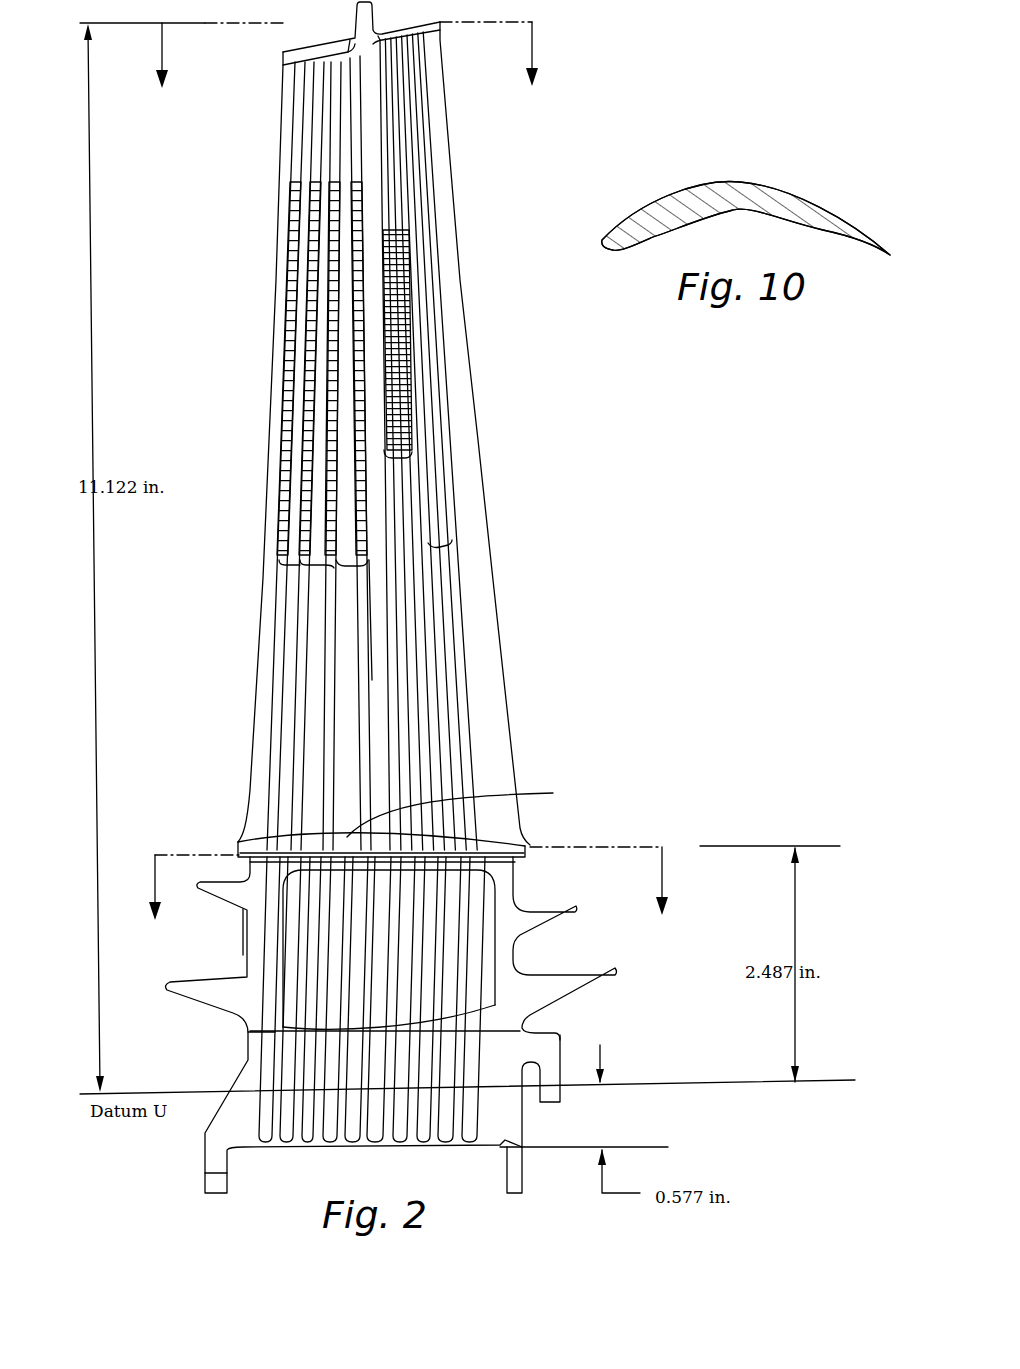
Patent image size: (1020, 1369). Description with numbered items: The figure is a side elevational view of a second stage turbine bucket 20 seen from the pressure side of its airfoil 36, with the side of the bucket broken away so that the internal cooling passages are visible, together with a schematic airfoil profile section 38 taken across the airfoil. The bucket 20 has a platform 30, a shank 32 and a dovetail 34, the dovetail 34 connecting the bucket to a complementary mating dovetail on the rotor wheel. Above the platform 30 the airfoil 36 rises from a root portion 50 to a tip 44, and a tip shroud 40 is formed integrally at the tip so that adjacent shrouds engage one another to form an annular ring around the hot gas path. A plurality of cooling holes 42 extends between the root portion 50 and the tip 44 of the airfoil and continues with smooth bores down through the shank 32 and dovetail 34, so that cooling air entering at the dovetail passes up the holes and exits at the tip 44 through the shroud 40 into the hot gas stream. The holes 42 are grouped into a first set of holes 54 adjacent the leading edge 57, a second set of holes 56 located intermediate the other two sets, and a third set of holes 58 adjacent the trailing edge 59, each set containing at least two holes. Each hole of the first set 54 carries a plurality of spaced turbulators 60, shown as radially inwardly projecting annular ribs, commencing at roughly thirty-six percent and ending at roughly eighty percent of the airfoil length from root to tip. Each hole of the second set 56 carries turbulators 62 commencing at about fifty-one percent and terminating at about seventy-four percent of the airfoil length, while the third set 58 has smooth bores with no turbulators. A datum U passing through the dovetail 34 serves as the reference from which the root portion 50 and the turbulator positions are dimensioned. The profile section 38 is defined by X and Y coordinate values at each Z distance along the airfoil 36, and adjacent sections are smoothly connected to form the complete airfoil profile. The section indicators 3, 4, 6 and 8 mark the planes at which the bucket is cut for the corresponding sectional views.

In FIG. 2, the section line 3- 3 is at (346, 69).
In FIG. 2, the section line 4- 4 is at (408, 900).
In FIG. 2, the section line 6- 6 is at (297, 172).
In FIG. 2, the section line 8- 8 is at (385, 218).
In FIG. 2, the bucket 20 is at (290, 703).
In FIG. 2, the platform 30 is at (290, 838).
In FIG. 2, the shank 32 is at (507, 937).
In FIG. 2, the dovetail 34 is at (512, 1107).
In FIG. 10, the airfoil 36 is at (655, 215).
In FIG. 10, the profile section 38 is at (735, 180).
In FIG. 2, the tip shroud 40 is at (270, 43).
In FIG. 2, the cooling holes 42 is at (372, 678).
In FIG. 2, the tip 44 is at (365, 46).
In FIG. 2, the root portion 50 is at (464, 809).
In FIG. 2, the first set of holes 54 is at (323, 560).
In FIG. 2, the second set of holes 56 is at (395, 458).
In FIG. 2, the leading edge 57 is at (273, 327).
In FIG. 2, the third set of holes 58 is at (440, 547).
In FIG. 2, the trailing edge 59 is at (463, 302).
In FIG. 2, the turbulators 60 is at (288, 407).
In FIG. 2, the turbulators 62 is at (400, 327).